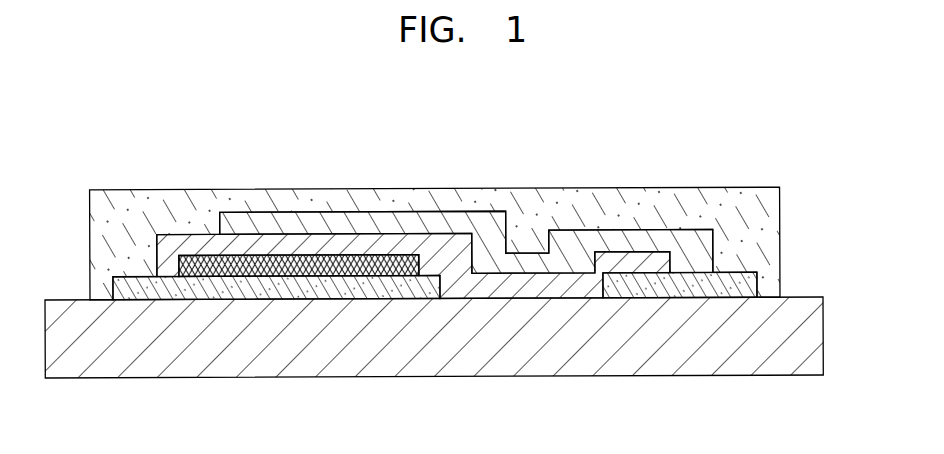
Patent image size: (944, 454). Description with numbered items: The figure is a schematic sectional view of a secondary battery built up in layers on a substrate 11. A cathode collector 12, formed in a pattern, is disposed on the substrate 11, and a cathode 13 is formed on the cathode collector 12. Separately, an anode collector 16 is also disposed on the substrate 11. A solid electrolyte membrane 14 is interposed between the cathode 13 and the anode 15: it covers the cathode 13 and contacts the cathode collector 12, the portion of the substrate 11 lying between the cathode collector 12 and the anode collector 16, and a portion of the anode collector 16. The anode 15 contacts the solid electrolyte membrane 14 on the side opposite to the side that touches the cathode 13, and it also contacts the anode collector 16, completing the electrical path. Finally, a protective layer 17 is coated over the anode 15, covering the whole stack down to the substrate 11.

The substrate 11 is at (823, 336).
The cathode collector 12 is at (227, 300).
The cathode 13 is at (330, 278).
The solid electrolyte membrane 14 is at (312, 248).
The anode 15 is at (422, 226).
The anode collector 16 is at (690, 285).
The protective layer 17 is at (772, 238).